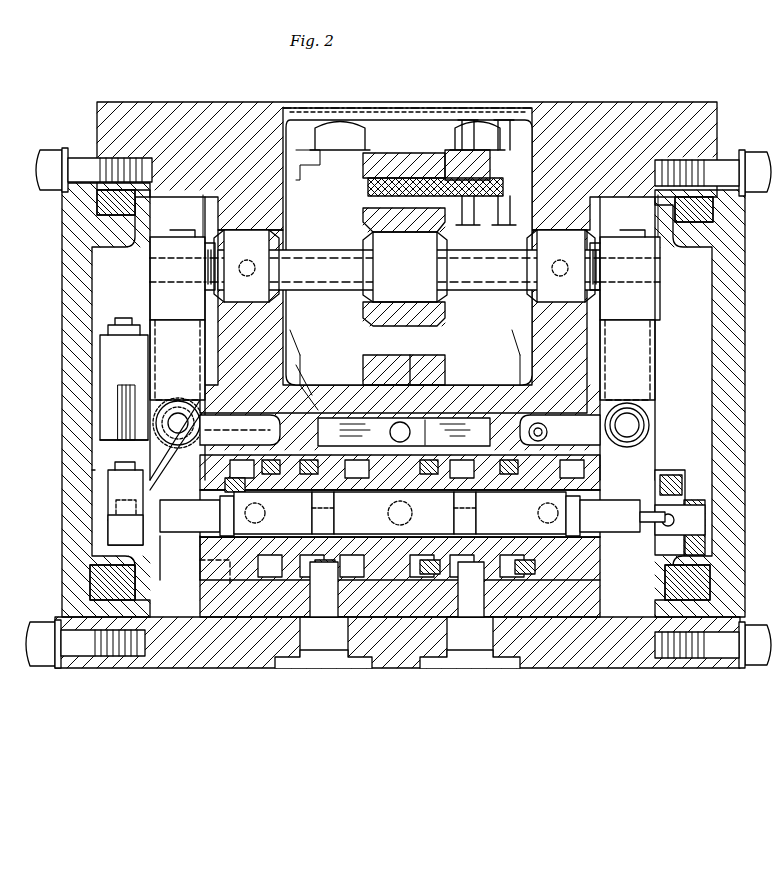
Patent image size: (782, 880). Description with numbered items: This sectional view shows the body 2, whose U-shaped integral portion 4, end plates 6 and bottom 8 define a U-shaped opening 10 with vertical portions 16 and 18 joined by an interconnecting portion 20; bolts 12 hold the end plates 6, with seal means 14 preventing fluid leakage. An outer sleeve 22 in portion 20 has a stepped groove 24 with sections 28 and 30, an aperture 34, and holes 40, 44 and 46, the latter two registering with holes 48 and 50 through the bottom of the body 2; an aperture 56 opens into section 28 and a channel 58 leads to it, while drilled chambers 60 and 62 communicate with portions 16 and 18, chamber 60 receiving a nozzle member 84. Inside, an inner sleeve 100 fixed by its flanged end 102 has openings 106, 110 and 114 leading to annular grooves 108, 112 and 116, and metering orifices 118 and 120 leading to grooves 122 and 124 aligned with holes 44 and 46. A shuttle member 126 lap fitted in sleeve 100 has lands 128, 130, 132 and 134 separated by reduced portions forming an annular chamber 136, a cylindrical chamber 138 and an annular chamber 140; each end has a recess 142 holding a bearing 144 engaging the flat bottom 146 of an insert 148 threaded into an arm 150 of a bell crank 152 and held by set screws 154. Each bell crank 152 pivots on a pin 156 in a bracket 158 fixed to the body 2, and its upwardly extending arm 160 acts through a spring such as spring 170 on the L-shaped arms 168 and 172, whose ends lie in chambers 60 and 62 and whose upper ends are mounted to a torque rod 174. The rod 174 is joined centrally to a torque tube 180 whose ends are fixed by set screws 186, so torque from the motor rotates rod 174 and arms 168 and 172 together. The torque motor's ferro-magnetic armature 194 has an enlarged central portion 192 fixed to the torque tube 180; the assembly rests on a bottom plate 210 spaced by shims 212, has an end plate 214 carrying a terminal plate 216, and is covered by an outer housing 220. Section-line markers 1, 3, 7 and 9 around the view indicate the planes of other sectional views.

The body 2 is at (626, 101).
The U-shaped integral portion 4 is at (528, 320).
The bottom 8 is at (622, 668).
The U-shaped opening 10 is at (700, 335).
The bolts 12 is at (50, 150).
The seal means 14 is at (730, 158).
The vertically extending portion 16 is at (106, 400).
The vertically extending portion 18 is at (700, 403).
The interconnecting opening portion 20 is at (548, 620).
The outer sleeve 22 is at (200, 600).
The stepped groove 24 is at (455, 428).
The section of stepped groove 28 is at (426, 420).
The section of stepped groove 30 is at (318, 395).
The aperture 34 is at (553, 432).
The hole 40 is at (385, 590).
The hole 44 is at (330, 618).
The hole 46 is at (480, 640).
The hole 48 is at (302, 660).
The hole 50 is at (465, 660).
The aperture 56 is at (388, 426).
The channel 58 is at (408, 506).
The chamber 60 is at (210, 386).
The chamber 62 is at (588, 410).
The nozzle member 84 is at (262, 432).
The inner sleeve 100 is at (588, 580).
The flanged end 102 is at (198, 580).
The openings 106 is at (258, 496).
The exterior annular groove 108 is at (240, 588).
The openings 110 is at (598, 476).
The exterior annular groove 112 is at (598, 548).
The openings 114 is at (394, 513).
The exterior annular groove 116 is at (360, 526).
The metering orifice 118 is at (312, 526).
The metering orifice 120 is at (488, 526).
The exterior annular groove 122 is at (327, 513).
The exterior annular groove 124 is at (469, 513).
The shuttle member 126 is at (182, 536).
The land 128 is at (222, 510).
The land 130 is at (328, 560).
The land 132 is at (466, 555).
The land 134 is at (588, 517).
The bolt 136 is at (290, 560).
The cylindrical chamber 138 is at (428, 526).
The annular chamber 140 is at (521, 513).
The recess 142 is at (680, 516).
The bearing 144 is at (108, 517).
The flat bottom 146 is at (706, 548).
The insert 148 is at (690, 500).
The arm of bell crank 150 is at (110, 488).
The bell crank 152 is at (92, 455).
The set screws 154 is at (680, 431).
The pin 156 is at (100, 325).
The bracket 158 is at (208, 245).
The arm of bell crank 160 is at (174, 445).
The L-shaped arm 168 is at (177, 338).
The spring 170 is at (648, 420).
The L-shaped arm 172 is at (627, 338).
The torque rod 174 is at (660, 265).
The torque tube 180 is at (364, 285).
The set screws 186 is at (262, 266).
The enlarged central portion of armature 192 is at (445, 306).
The armature 194 is at (360, 218).
The bottom plate 210 is at (372, 358).
The shims 212 is at (418, 356).
The end plate 214 is at (382, 153).
The terminal plate 216 is at (366, 185).
The outer housing 220 is at (345, 107).
The section line 1 is at (22, 196).
The section line 3 is at (393, 80).
The end plates 6 is at (112, 78).
The section line 7 is at (543, 382).
The section line 9 is at (130, 280).